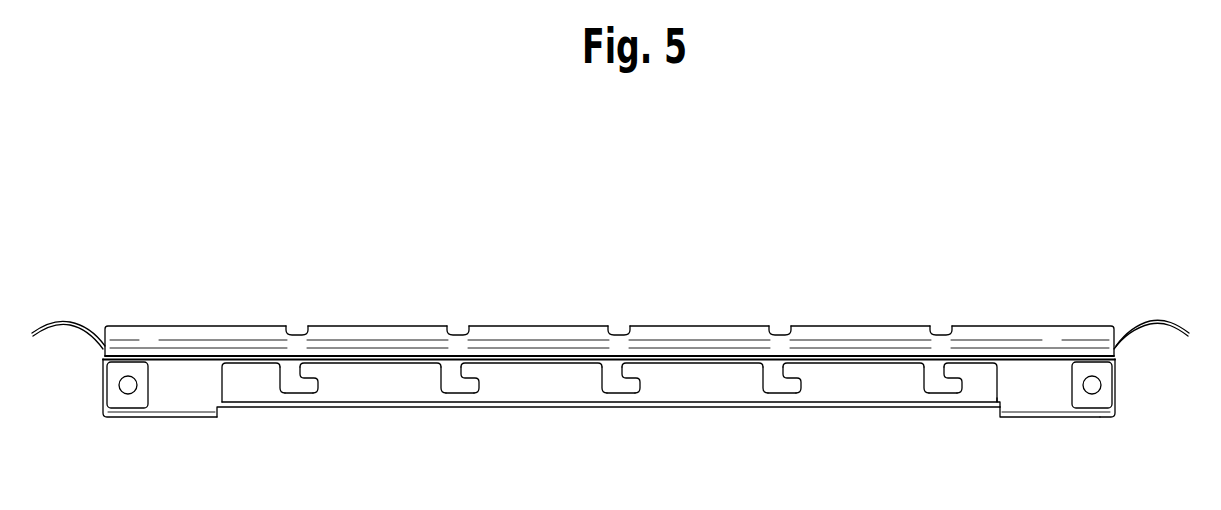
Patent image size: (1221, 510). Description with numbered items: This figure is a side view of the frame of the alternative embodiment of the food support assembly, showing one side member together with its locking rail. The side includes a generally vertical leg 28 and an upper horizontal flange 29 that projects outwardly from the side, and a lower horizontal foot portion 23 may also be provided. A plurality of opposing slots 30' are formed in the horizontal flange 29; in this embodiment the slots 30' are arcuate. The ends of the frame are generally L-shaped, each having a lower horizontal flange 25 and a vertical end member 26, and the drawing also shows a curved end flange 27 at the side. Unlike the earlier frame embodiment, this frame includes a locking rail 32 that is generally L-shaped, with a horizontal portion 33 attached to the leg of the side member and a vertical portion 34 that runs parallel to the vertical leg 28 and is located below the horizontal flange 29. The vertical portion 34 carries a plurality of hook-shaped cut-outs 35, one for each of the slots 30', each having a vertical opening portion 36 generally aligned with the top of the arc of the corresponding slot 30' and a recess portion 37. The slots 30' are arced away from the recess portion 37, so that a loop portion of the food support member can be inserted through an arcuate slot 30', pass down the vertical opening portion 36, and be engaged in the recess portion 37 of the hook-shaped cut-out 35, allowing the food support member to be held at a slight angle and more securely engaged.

The lower horizontal foot portion 23 is at (609, 418).
The lower horizontal flange 25 is at (1128, 413).
The vertical end member 26 is at (613, 396).
The curved end flange 27 is at (72, 310).
The vertical leg 28 is at (1050, 433).
The upper horizontal flange 29 is at (653, 312).
The slots 30' is at (619, 303).
The locking rail 32 is at (609, 422).
The horizontal portion 33 is at (980, 433).
The vertical portion 34 is at (609, 411).
The hook-shaped cut-outs 35 is at (606, 426).
The vertical opening portion 36 is at (604, 413).
The recess portion 37 is at (631, 361).